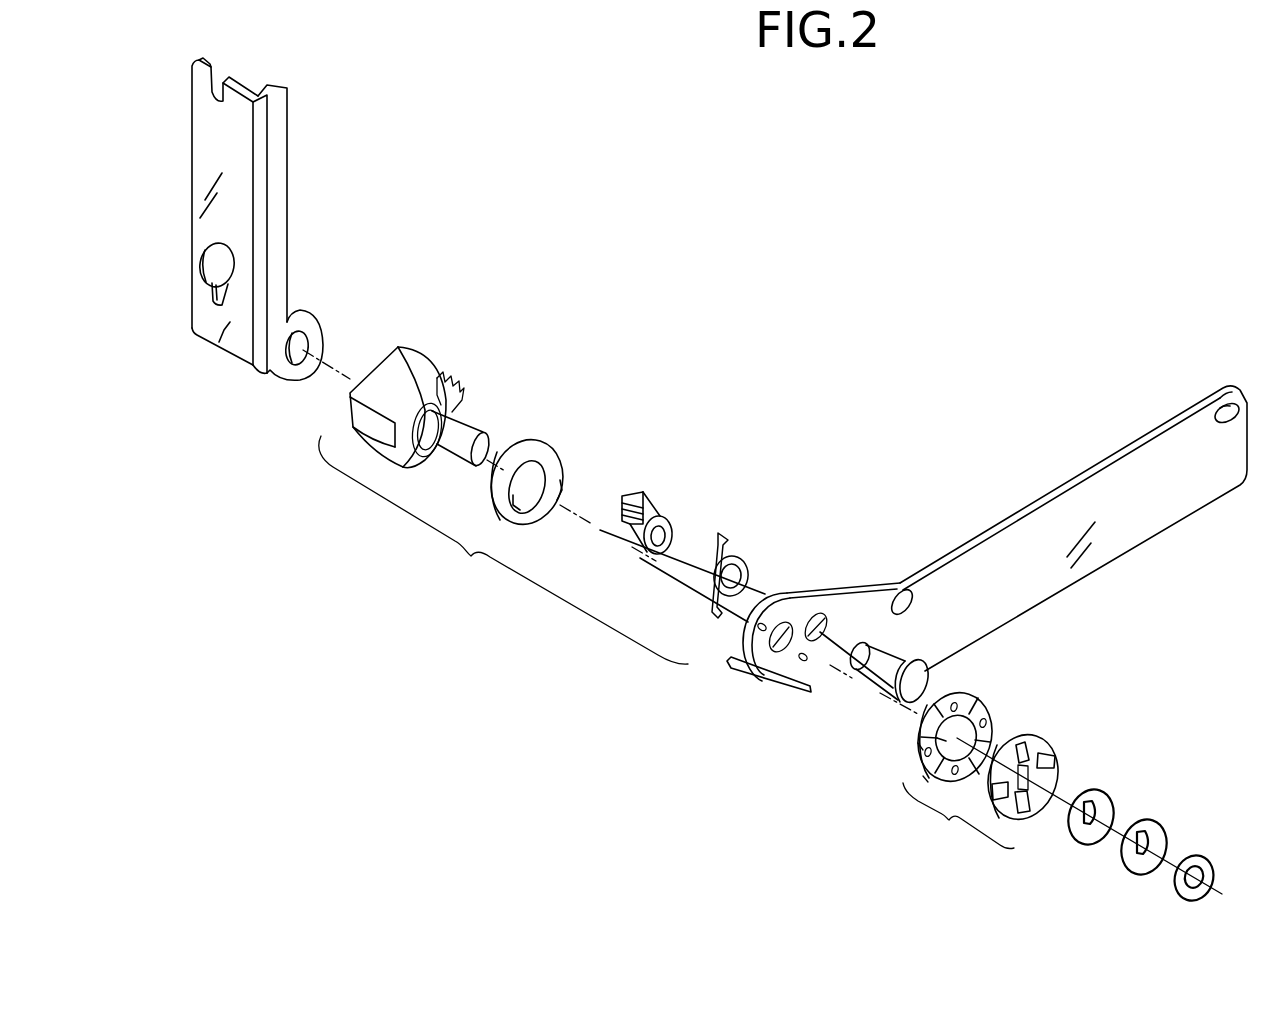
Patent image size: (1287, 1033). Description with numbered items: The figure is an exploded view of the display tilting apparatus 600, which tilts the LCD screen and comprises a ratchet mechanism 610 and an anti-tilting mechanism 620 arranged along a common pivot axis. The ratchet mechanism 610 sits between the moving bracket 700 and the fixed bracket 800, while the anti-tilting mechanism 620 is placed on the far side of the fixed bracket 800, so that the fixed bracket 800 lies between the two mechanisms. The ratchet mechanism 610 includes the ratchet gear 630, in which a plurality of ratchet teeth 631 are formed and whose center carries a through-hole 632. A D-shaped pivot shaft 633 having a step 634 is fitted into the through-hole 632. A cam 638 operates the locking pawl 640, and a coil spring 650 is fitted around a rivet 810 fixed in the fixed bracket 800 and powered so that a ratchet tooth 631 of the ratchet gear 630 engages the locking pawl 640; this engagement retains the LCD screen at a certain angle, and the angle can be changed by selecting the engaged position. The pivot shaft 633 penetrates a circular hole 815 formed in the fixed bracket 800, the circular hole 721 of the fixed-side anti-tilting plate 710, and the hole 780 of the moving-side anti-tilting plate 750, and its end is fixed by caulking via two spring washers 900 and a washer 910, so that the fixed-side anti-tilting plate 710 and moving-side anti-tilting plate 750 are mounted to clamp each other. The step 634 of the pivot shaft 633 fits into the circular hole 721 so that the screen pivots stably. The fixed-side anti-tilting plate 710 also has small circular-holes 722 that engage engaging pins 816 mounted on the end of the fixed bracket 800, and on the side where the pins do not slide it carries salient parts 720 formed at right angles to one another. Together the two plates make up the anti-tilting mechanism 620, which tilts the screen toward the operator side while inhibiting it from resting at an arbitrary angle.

The display tilting apparatus 600 is at (295, 114).
The moving bracket 700 is at (280, 181).
The ratchet mechanism 610 is at (503, 550).
The ratchet gear 630 is at (410, 362).
The ratchet teeth 631 is at (453, 388).
The through-hole 632 is at (357, 429).
The pivot shaft 633 is at (484, 446).
The step 634 is at (427, 404).
The cam 638 is at (551, 460).
The locking pawl 640 is at (667, 511).
The coil spring 650 is at (732, 552).
The fixed bracket 800 is at (1180, 432).
The rivet 810 is at (877, 653).
The circular hole 815 is at (782, 652).
The engaging pins 816 is at (760, 631).
The anti-tilting mechanism 620 is at (958, 816).
The fixed-side anti-tilting plate 710 is at (974, 701).
The small circular-holes 722 is at (985, 720).
The circular hole 721 is at (918, 746).
The salient parts 720 is at (925, 779).
The moving-side anti-tilting plate 750 is at (1049, 761).
The hole 780 is at (1026, 792).
The spring washers 900 is at (1105, 803).
The washer 910 is at (1207, 860).